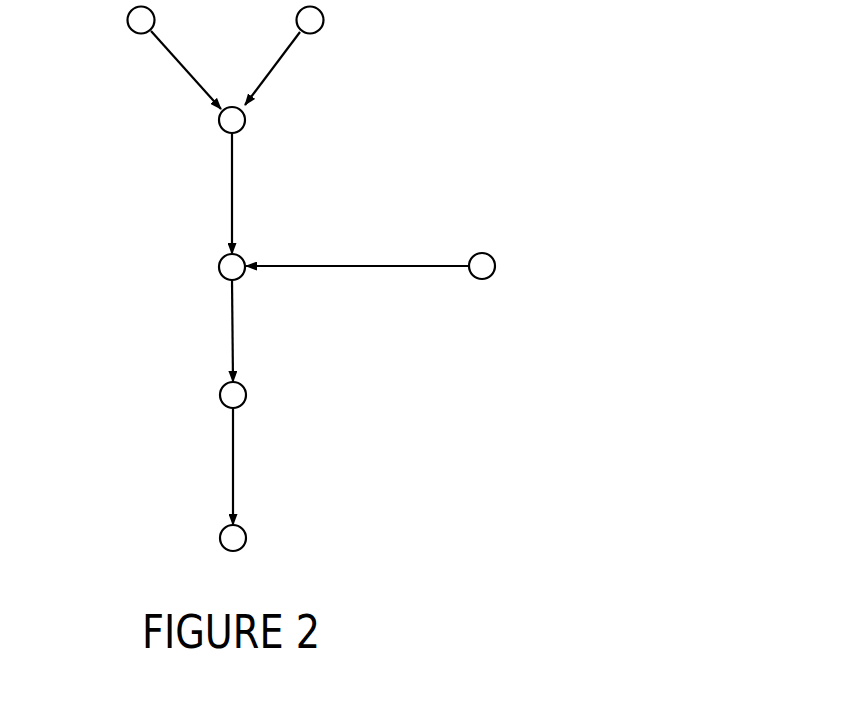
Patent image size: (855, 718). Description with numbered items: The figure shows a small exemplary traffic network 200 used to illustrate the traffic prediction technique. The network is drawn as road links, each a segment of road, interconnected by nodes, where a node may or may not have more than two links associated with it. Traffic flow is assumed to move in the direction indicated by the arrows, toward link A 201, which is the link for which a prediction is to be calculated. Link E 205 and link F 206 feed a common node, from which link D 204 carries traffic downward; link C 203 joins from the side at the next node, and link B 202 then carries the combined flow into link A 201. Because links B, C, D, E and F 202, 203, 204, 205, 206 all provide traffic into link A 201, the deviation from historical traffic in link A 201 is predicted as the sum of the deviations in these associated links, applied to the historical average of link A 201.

The traffic network 200 is at (527, 43).
The link A 201 is at (258, 452).
The link B 202 is at (207, 352).
The link C 203 is at (362, 283).
The link D 204 is at (243, 195).
The link E 205 is at (168, 62).
The link F 206 is at (285, 65).